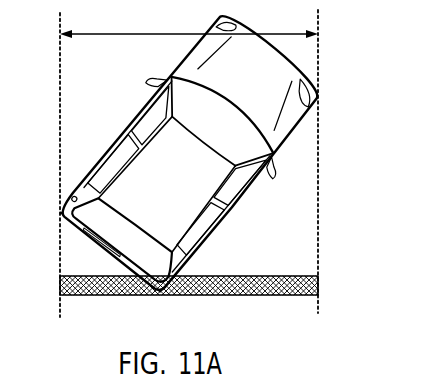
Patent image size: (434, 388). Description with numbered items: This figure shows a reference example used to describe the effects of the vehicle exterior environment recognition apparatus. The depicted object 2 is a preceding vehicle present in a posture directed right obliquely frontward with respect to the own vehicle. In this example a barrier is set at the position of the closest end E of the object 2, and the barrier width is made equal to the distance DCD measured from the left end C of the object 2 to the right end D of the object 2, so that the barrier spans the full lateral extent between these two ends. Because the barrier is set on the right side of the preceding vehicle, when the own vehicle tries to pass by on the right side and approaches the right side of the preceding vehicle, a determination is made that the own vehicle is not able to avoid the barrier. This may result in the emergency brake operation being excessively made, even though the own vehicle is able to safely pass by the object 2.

The object 2 is at (298, 70).
The right end D is at (318, 95).
The left end C is at (62, 211).
The distance DCD is at (189, 23).
The closest end E is at (160, 292).